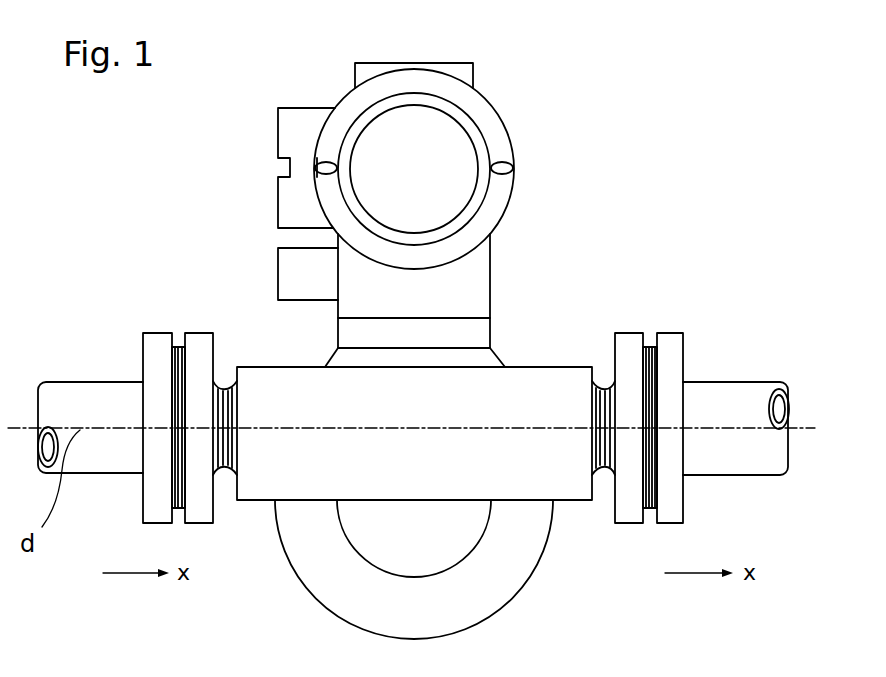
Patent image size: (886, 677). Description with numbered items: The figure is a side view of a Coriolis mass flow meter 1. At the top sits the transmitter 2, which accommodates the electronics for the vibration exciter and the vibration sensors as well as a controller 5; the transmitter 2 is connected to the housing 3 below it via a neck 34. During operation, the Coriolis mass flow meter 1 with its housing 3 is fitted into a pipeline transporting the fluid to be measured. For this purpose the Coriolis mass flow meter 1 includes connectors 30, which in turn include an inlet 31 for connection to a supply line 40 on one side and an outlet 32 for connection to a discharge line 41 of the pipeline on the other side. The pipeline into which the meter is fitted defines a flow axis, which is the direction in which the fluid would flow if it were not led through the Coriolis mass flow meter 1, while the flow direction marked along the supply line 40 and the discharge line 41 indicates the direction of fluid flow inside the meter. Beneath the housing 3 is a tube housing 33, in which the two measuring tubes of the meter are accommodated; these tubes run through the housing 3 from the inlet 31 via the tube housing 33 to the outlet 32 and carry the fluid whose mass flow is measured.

The Coriolis mass flow meter 1 is at (552, 143).
The transmitter 2 is at (393, 157).
The housing 3 is at (288, 385).
The controller 5 is at (297, 137).
The connectors 30 is at (603, 392).
The inlet 31 is at (202, 353).
The outlet 32 is at (627, 353).
The tube housing 33 is at (517, 543).
The neck 34 is at (447, 335).
The supply line 40 is at (98, 405).
The discharge line 41 is at (723, 405).